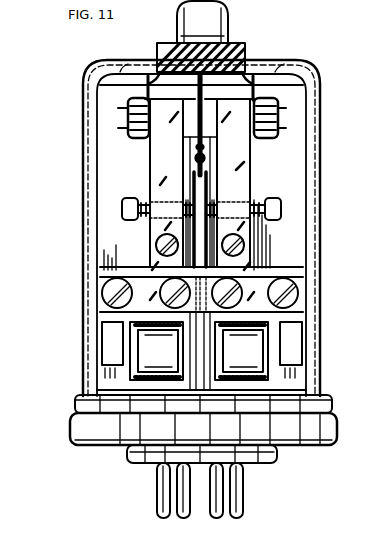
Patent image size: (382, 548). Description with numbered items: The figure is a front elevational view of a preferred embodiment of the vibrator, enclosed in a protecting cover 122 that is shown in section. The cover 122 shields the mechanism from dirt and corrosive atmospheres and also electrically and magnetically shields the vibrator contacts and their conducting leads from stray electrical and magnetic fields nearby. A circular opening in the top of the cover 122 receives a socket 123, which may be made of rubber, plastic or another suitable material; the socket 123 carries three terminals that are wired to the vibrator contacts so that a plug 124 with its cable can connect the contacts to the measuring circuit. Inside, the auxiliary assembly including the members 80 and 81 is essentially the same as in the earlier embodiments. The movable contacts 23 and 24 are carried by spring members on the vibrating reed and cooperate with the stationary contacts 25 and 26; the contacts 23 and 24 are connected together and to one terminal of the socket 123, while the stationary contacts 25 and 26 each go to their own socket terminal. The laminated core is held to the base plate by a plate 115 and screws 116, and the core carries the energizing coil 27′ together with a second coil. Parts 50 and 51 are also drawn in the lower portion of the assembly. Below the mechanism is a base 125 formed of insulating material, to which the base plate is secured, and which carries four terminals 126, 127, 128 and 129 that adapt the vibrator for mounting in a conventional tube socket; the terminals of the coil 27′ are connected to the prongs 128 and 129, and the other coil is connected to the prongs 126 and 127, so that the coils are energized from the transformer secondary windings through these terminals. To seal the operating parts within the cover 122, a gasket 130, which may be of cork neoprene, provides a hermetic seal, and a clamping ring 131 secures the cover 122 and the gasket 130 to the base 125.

The cover 122 is at (85, 206).
The socket 123 is at (240, 56).
The plug 124 is at (228, 14).
The auxiliary assembly member 80 is at (252, 157).
The auxiliary assembly member 81 is at (150, 157).
The contact 23 is at (216, 207).
The contact 24 is at (180, 206).
The stationary contact 25 is at (268, 198).
The stationary contact 26 is at (128, 198).
The plate 115 is at (143, 275).
The screws 116 is at (242, 294).
The coil 27′ is at (241, 351).
The block 50 is at (284, 368).
The block 51 is at (118, 368).
The base 125 is at (80, 398).
The gasket 130 is at (75, 406).
The clamping ring 131 is at (72, 426).
The terminal 126 is at (157, 480).
The terminal 127 is at (182, 521).
The terminal 128 is at (218, 521).
The terminal 129 is at (244, 484).